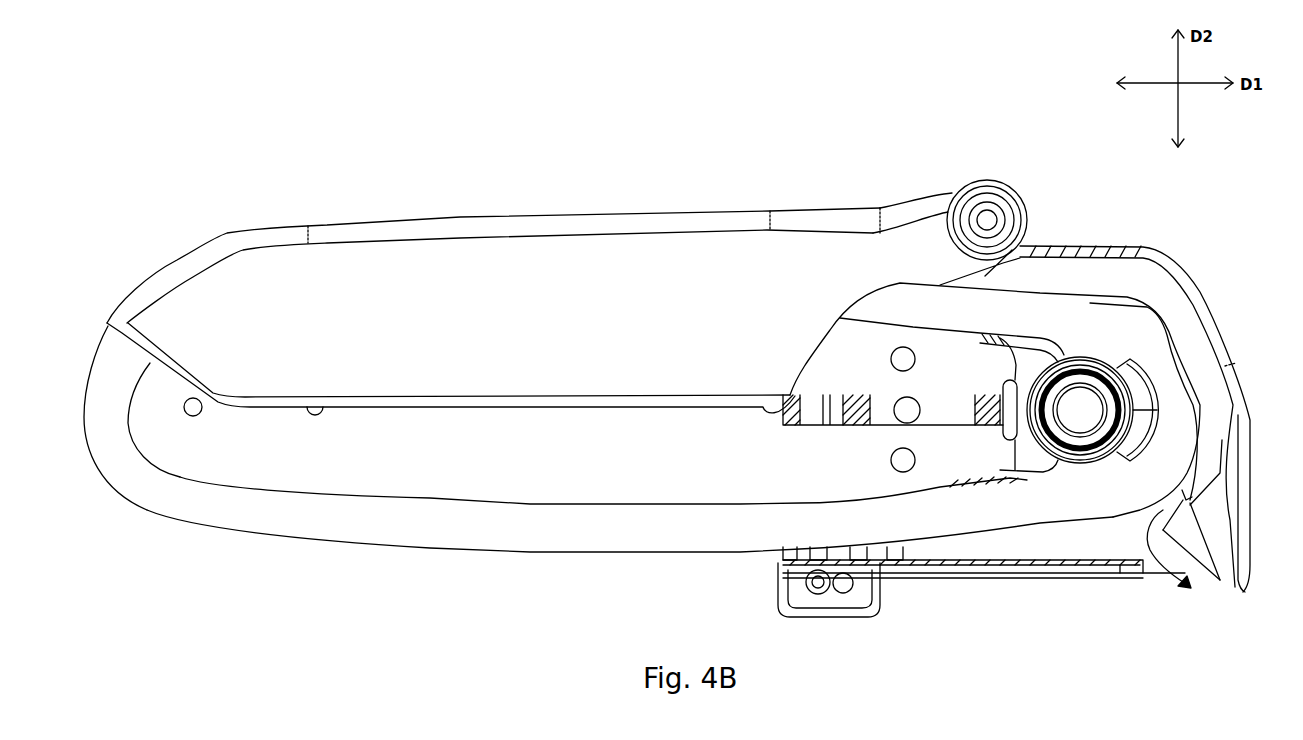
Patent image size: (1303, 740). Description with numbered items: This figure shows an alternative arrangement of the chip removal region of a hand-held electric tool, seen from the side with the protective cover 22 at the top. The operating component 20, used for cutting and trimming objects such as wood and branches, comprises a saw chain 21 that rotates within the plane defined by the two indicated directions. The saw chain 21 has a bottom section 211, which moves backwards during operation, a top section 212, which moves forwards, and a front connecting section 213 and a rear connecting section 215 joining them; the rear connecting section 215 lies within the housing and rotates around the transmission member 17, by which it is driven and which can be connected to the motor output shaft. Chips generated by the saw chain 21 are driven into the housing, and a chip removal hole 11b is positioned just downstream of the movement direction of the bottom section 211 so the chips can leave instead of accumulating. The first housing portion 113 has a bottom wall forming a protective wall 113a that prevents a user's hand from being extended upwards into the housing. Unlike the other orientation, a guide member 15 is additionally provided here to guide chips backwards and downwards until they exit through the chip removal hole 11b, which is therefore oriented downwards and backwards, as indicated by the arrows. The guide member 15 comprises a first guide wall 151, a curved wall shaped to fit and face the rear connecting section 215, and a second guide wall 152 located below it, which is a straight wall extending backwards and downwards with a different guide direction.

The operating component 20 is at (195, 205).
The protective cover 22 is at (320, 267).
The front connecting section of saw chain 213 is at (107, 430).
The saw chain 21 is at (238, 510).
The bottom section of saw chain 211 is at (452, 532).
The top section of saw chain 212 is at (1025, 318).
The transmission member 17 is at (1073, 412).
The first housing portion of main body section 113 is at (1207, 293).
The rear connecting section of saw chain 215 is at (1181, 380).
The first guide wall 151 is at (1220, 470).
The guide member 15 is at (1208, 518).
The second guide wall 152 is at (1193, 558).
The protective wall 113a is at (960, 570).
The chip removal hole 11b is at (1152, 590).